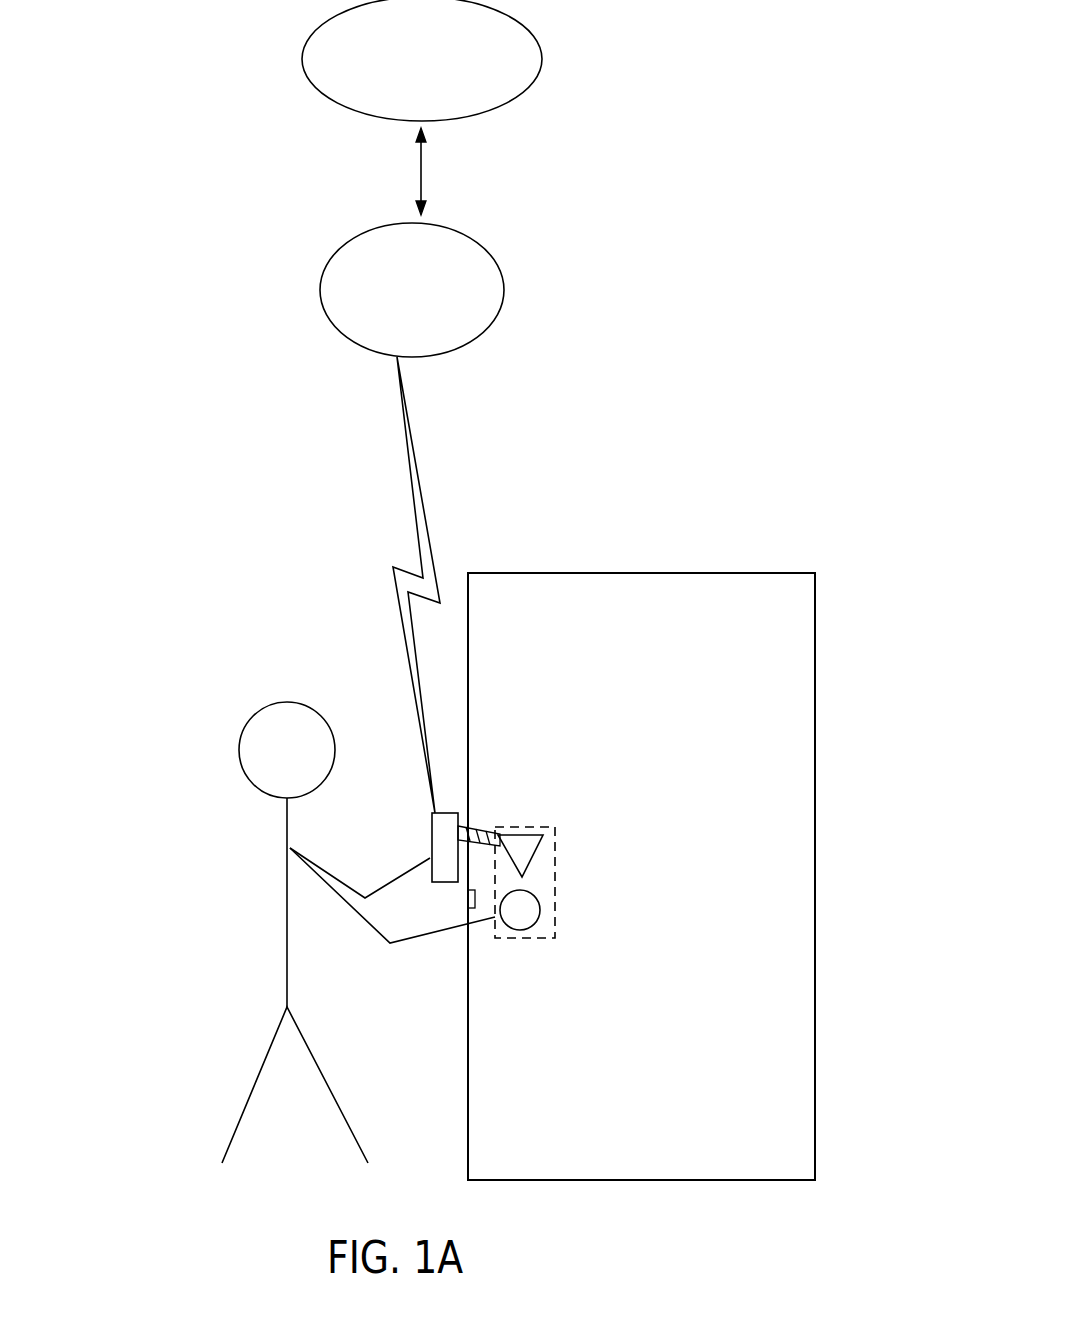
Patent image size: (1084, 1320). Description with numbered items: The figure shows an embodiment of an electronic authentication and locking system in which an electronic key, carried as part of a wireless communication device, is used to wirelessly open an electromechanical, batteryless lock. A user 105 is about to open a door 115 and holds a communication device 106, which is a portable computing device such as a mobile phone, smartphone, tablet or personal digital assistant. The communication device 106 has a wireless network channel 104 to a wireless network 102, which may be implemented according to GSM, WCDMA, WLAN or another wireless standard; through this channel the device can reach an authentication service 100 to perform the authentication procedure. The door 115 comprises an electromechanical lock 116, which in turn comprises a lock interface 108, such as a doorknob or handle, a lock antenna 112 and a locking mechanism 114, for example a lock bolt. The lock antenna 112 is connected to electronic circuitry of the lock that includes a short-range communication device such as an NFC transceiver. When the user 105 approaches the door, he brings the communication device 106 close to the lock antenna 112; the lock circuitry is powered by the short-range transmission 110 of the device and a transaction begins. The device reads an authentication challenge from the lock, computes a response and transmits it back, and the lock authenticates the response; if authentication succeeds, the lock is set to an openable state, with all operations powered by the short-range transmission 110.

The authentication service 100 is at (507, 103).
The wireless network 102 is at (502, 302).
The wireless network channel 104 is at (415, 460).
The user 105 is at (285, 918).
The communication device 106 is at (432, 830).
The lock interface 108 is at (520, 930).
The short-range transmission 110 is at (480, 835).
The lock antenna 112 is at (535, 860).
The locking mechanism 114 is at (468, 902).
The door 115 is at (642, 573).
The electromechanical lock 116 is at (555, 912).